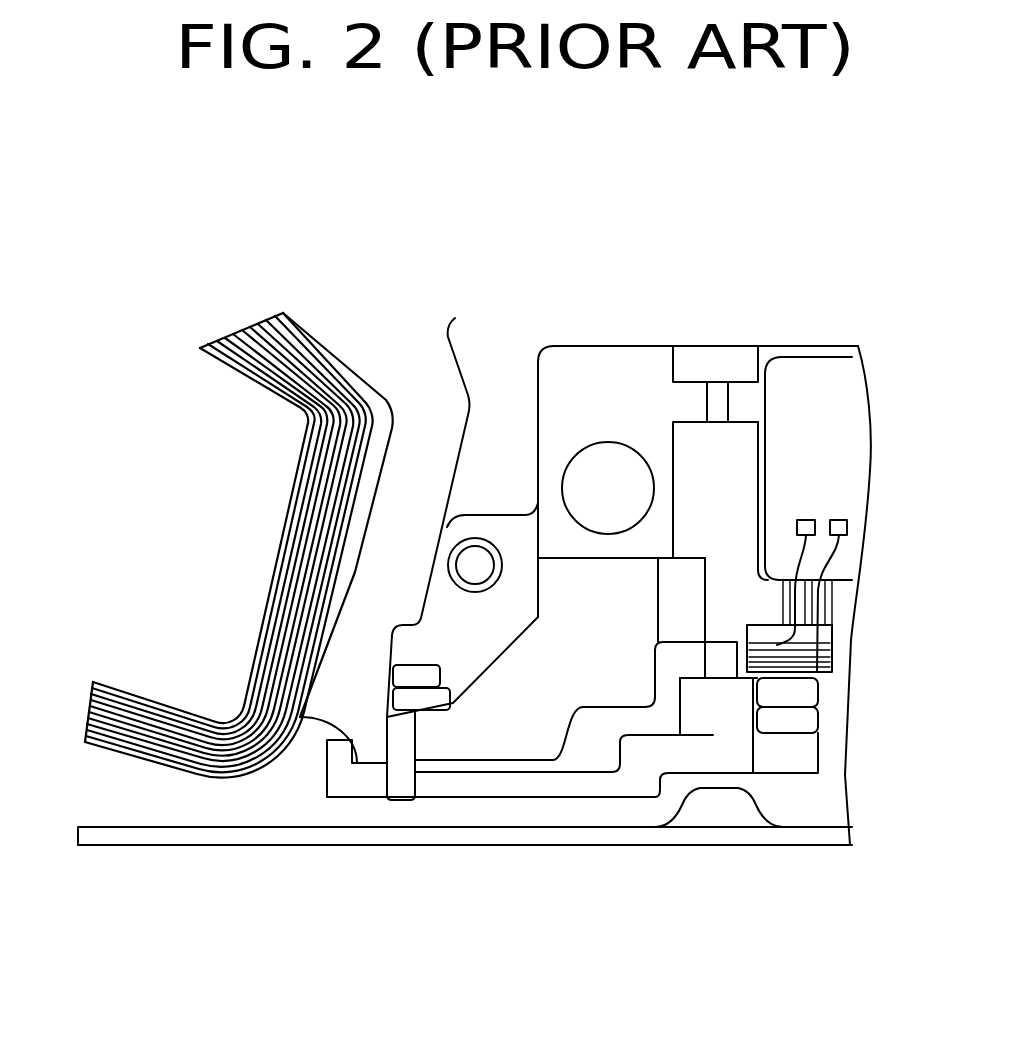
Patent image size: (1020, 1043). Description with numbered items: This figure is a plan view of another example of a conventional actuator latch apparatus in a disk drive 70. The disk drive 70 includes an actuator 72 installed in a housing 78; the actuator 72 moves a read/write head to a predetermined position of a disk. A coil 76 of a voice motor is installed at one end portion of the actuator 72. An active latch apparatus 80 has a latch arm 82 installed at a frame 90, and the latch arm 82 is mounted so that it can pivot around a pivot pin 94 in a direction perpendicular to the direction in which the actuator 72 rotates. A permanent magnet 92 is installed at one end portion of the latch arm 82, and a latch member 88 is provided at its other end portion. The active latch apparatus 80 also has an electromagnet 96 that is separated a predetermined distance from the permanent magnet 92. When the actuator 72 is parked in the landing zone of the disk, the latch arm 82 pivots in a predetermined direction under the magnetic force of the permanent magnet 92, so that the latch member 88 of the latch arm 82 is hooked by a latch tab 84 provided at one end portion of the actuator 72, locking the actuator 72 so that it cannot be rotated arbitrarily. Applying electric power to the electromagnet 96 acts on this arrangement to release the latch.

The disk drive 70 is at (153, 845).
The actuator 72 is at (102, 756).
The coil 76 is at (132, 690).
The housing 78 is at (258, 846).
The active latch apparatus 80 is at (532, 799).
The latch arm 82 is at (573, 799).
The latch tab 84 is at (370, 750).
The latch member 88 is at (497, 783).
The frame 90 is at (628, 623).
The permanent magnet 92 is at (810, 692).
The pivot pin 94 is at (703, 660).
The electromagnet 96 is at (827, 633).